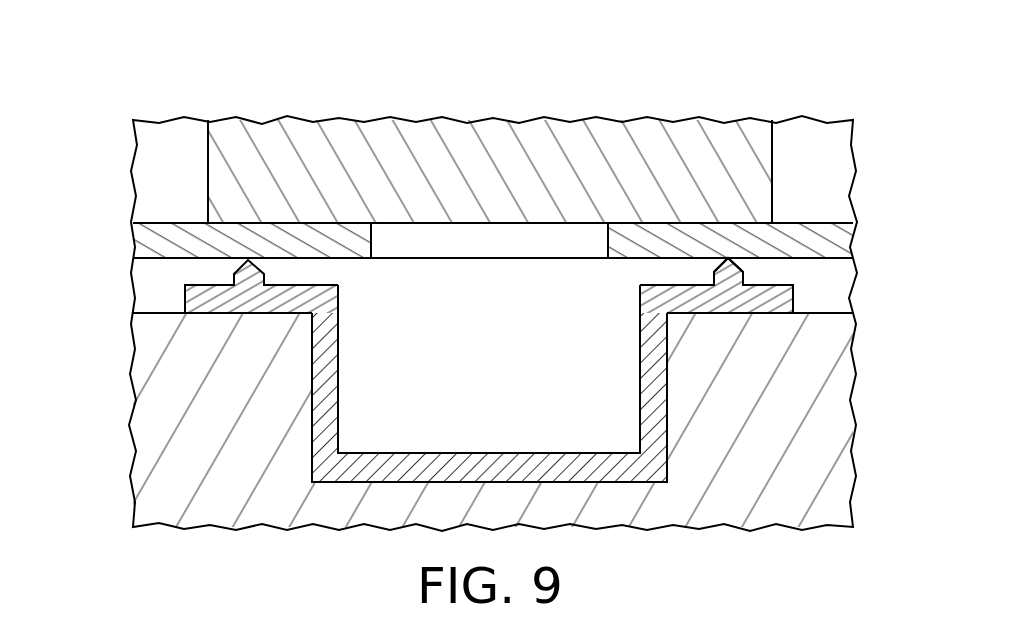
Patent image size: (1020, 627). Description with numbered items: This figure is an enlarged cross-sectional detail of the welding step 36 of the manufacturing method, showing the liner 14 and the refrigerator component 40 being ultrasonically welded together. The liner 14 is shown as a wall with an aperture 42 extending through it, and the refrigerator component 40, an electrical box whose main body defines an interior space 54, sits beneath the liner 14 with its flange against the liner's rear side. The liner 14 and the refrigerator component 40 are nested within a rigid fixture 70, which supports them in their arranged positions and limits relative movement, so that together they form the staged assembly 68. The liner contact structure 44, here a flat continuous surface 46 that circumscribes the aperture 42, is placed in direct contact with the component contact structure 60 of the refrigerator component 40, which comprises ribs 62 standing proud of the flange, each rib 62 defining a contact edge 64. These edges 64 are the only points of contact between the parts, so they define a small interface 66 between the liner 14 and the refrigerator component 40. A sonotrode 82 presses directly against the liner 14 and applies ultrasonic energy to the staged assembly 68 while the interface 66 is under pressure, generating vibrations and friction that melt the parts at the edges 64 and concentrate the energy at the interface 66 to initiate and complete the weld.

The welding step 36 is at (819, 95).
The sonotrode 82 is at (207, 160).
The aperture 42 is at (449, 200).
The liner 14 is at (469, 194).
The component contact structure 60 is at (730, 194).
The contact edge 64 is at (728, 258).
The interface 66 is at (750, 253).
The rib 62 is at (489, 252).
The liner contact structure 44 is at (798, 325).
The surface 46 is at (777, 270).
The staged assembly 68 is at (234, 326).
The rigid fixture 70 is at (493, 441).
The refrigerator component 40 is at (528, 427).
The interior space 54 is at (590, 425).